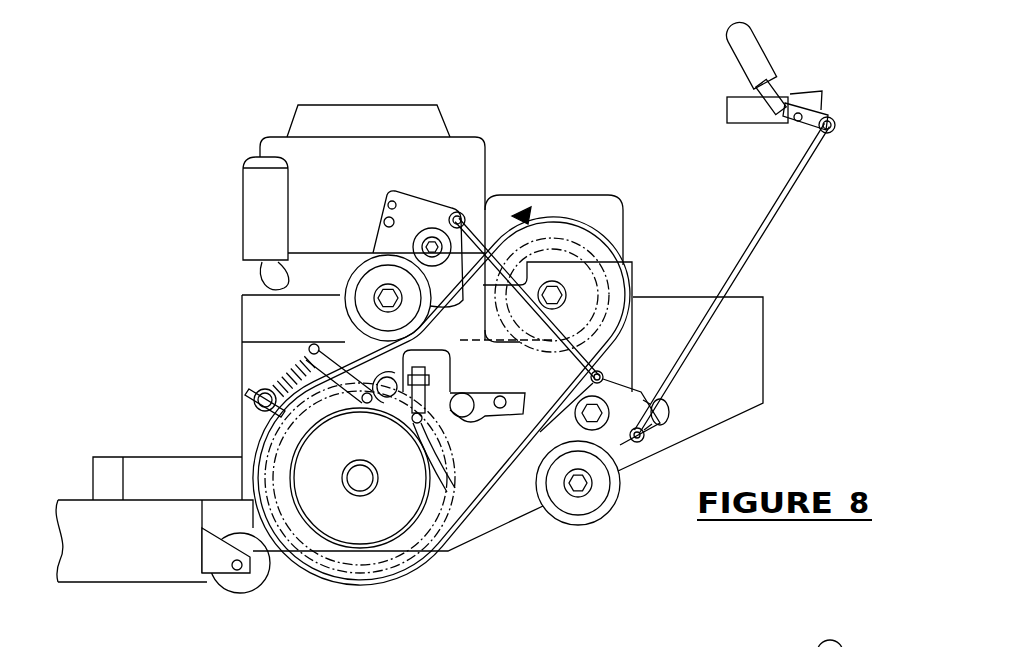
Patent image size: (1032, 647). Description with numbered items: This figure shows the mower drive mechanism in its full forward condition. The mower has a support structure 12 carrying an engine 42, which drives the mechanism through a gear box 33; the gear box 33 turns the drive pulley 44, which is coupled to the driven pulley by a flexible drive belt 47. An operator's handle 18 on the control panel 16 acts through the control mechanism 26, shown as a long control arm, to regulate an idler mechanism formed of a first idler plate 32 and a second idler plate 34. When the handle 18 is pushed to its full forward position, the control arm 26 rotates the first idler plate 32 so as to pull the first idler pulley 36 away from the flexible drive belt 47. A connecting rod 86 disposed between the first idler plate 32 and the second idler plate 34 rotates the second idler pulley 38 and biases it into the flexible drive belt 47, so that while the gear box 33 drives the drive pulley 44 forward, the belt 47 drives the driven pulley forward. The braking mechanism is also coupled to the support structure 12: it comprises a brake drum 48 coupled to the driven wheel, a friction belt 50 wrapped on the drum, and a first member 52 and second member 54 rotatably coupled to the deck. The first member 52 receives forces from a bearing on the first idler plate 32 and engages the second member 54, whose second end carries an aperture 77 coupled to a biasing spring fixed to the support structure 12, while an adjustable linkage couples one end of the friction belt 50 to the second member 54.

The support structure 12 is at (166, 466).
The control panel 16 is at (818, 100).
The handle 18 is at (740, 43).
The control mechanism 26 is at (764, 232).
The first idler plate 32 is at (617, 446).
The gear box 33 is at (613, 210).
The second idler plate 34 is at (425, 207).
The first idler pulley 36 is at (581, 506).
The second idler pulley 38 is at (366, 275).
The engine 42 is at (480, 147).
The drive pulley 44 is at (580, 272).
The flexible drive belt 47 is at (471, 503).
The brake drum 48 is at (365, 533).
The friction belt 50 is at (404, 534).
The first member 52 is at (668, 412).
The second member 54 is at (323, 340).
The aperture 77 is at (262, 393).
The connecting rod 86 is at (560, 332).